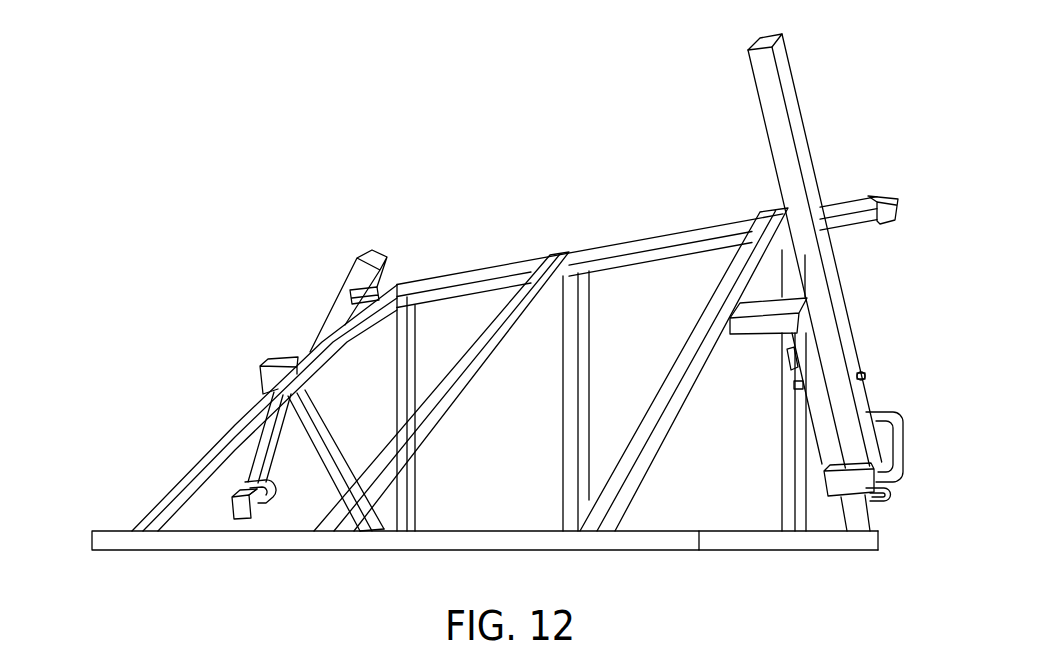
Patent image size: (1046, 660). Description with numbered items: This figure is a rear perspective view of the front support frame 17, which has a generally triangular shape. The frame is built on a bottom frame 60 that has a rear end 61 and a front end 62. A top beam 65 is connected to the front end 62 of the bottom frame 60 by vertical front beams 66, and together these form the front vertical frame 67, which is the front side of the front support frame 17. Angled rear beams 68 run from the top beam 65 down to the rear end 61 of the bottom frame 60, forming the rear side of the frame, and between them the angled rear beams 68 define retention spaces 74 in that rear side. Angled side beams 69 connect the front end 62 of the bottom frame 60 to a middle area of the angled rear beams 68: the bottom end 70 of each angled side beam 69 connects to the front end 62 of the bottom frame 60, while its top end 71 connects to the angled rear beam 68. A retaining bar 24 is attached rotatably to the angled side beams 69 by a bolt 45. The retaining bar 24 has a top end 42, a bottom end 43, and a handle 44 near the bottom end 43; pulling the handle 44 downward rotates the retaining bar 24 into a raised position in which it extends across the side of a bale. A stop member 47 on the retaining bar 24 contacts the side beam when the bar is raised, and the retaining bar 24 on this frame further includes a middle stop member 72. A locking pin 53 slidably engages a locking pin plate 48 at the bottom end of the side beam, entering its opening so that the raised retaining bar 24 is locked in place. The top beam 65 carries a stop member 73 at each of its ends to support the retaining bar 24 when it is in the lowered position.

The front support frame 17 is at (553, 213).
The retaining bar 24 is at (795, 116).
The top end 42 is at (757, 42).
The bottom end 43 is at (229, 514).
The handle 44 is at (893, 432).
The bolt 45 is at (864, 375).
The stop member 47 is at (836, 483).
The locking pin plate 48 is at (888, 498).
The locking pin 53 is at (255, 521).
The bottom frame 60 is at (793, 546).
The rear end 61 is at (86, 556).
The front end 62 is at (882, 558).
The top beam 65 is at (671, 233).
The vertical front beam 66 is at (411, 340).
The front vertical frame 67 is at (508, 257).
The angled rear beam 68 is at (348, 341).
The angled side beam 69 is at (317, 447).
The bottom end 70 is at (356, 524).
The top end 71 is at (280, 365).
The middle stop member 72 is at (792, 365).
The stop member 73 is at (889, 206).
The retention space 74 is at (462, 365).